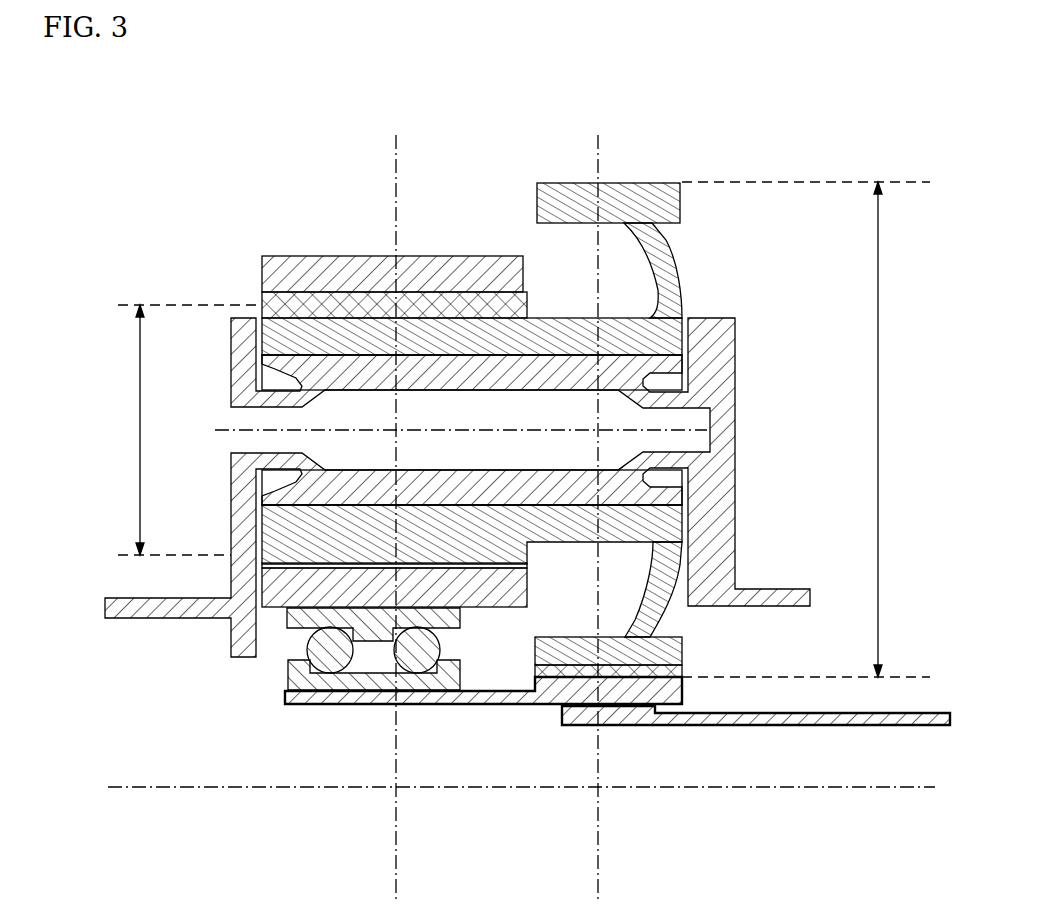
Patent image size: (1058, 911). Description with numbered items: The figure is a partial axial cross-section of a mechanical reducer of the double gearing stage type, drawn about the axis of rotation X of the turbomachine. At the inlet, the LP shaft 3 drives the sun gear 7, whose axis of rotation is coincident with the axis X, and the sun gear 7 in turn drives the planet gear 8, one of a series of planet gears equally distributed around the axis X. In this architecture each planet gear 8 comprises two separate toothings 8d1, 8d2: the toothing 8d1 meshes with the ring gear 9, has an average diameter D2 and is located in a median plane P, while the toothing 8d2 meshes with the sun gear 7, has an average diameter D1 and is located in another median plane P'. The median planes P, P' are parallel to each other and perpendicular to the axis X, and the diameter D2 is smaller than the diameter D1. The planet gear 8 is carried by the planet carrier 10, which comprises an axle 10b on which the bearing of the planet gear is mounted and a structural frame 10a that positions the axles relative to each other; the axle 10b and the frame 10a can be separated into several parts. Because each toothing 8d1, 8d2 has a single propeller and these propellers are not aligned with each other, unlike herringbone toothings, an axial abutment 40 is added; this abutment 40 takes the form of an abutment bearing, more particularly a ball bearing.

The LP shaft 3 is at (885, 728).
The sun gear 7 is at (537, 706).
The planet gear 8 is at (680, 281).
The toothing 8d1 is at (308, 302).
The toothing 8d2 is at (672, 182).
The ring gear 9 is at (350, 265).
The planet carrier 10 is at (737, 376).
The structural frame 10a is at (714, 472).
The axle 10b is at (613, 373).
The axial abutment 40 is at (300, 673).
The average diameter D1 is at (878, 453).
The average diameter D2 is at (140, 438).
The median plane P is at (428, 517).
The median plane P' is at (632, 504).
The axis of rotation X is at (935, 790).